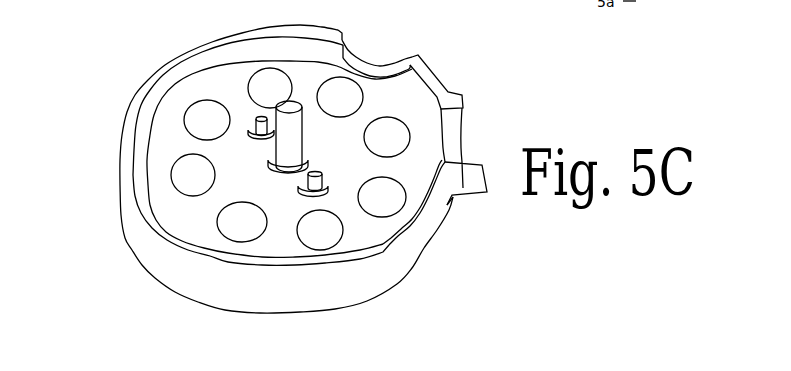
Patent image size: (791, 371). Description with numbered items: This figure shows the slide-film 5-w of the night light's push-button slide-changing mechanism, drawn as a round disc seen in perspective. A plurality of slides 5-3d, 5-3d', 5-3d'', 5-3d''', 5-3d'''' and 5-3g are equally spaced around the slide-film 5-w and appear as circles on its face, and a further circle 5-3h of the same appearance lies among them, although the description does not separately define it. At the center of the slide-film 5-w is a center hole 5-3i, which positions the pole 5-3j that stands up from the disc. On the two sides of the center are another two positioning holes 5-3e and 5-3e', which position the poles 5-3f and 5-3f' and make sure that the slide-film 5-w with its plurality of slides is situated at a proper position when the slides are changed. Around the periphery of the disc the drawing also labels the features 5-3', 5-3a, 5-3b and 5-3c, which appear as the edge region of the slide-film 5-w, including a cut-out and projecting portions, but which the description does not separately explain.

The slide-film 5-w is at (177, 110).
The outer wall of disc 5-3' is at (330, 249).
The notch 5-3c is at (373, 67).
The lug 5-3b is at (458, 138).
The lug side wall 5-3a is at (450, 202).
The slide 5-3g is at (207, 124).
The hole 5-3h is at (193, 190).
The slide 5-3d' is at (259, 57).
The slide 5-3d is at (328, 61).
The slide 5-3d''' is at (439, 112).
The slide 5-3d'' is at (418, 250).
The slide 5-3d'''' is at (148, 243).
The pole 5-3j is at (291, 143).
The center hole 5-3i is at (268, 162).
The pole 5-3f is at (217, 69).
The positioning hole 5-3e is at (198, 89).
The pole 5-3f' is at (287, 261).
The positioning hole 5-3e' is at (244, 257).